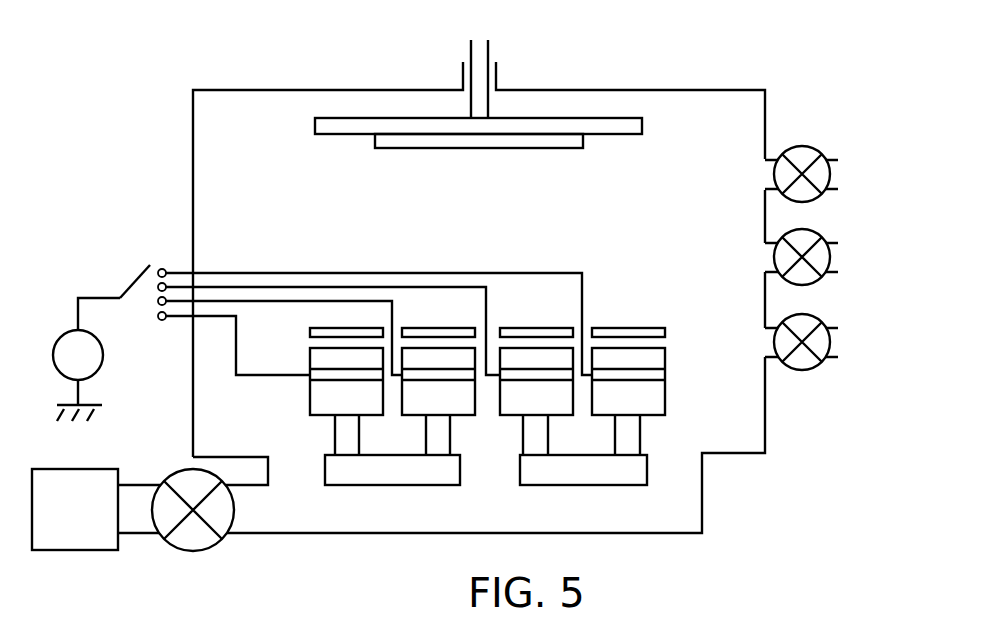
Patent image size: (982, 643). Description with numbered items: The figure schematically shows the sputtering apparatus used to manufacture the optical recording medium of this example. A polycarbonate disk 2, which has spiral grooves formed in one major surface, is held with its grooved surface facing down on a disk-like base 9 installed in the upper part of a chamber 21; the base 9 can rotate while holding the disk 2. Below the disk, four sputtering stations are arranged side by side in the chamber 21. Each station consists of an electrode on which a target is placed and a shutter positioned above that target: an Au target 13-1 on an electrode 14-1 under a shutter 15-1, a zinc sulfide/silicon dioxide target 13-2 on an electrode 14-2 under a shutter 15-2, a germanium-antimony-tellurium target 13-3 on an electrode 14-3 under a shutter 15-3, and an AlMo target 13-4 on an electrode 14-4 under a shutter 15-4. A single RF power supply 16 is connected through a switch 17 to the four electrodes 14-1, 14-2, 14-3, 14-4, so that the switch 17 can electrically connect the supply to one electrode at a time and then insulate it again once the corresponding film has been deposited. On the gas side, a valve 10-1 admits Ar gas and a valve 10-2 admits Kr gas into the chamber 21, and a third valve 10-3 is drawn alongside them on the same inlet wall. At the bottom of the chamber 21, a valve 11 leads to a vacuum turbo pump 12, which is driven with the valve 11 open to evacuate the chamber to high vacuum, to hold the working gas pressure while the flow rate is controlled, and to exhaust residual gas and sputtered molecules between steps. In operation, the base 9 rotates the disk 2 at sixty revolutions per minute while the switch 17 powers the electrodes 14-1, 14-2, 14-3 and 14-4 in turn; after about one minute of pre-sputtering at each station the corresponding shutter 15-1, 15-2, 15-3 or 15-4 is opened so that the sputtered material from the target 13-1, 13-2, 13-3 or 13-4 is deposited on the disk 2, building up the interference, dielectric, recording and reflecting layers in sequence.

The polycarbonate disk 2 is at (583, 145).
The disk-like base 9 is at (642, 126).
The valve 10-1 is at (814, 152).
The valve 10-2 is at (814, 236).
The lamp 10-3 is at (814, 320).
The valve 11 is at (191, 551).
The vacuum turbo pump 12 is at (65, 550).
The Au target 13-1 is at (655, 352).
The ZnS/SiO2 target 13-2 is at (520, 355).
The Ge2Sb2Te5 target 13-3 is at (418, 355).
The AlMo target 13-4 is at (313, 354).
The electrode 14-1 is at (655, 376).
The electrode 14-2 is at (515, 378).
The electrode 14-3 is at (458, 378).
The electrode 14-4 is at (325, 378).
The shutter 15-1 is at (630, 328).
The shutter 15-2 is at (548, 328).
The shutter 15-3 is at (442, 328).
The shutter 15-4 is at (333, 328).
The RF power supply 16 is at (103, 355).
The switch 17 is at (138, 280).
The chamber 21 is at (193, 124).